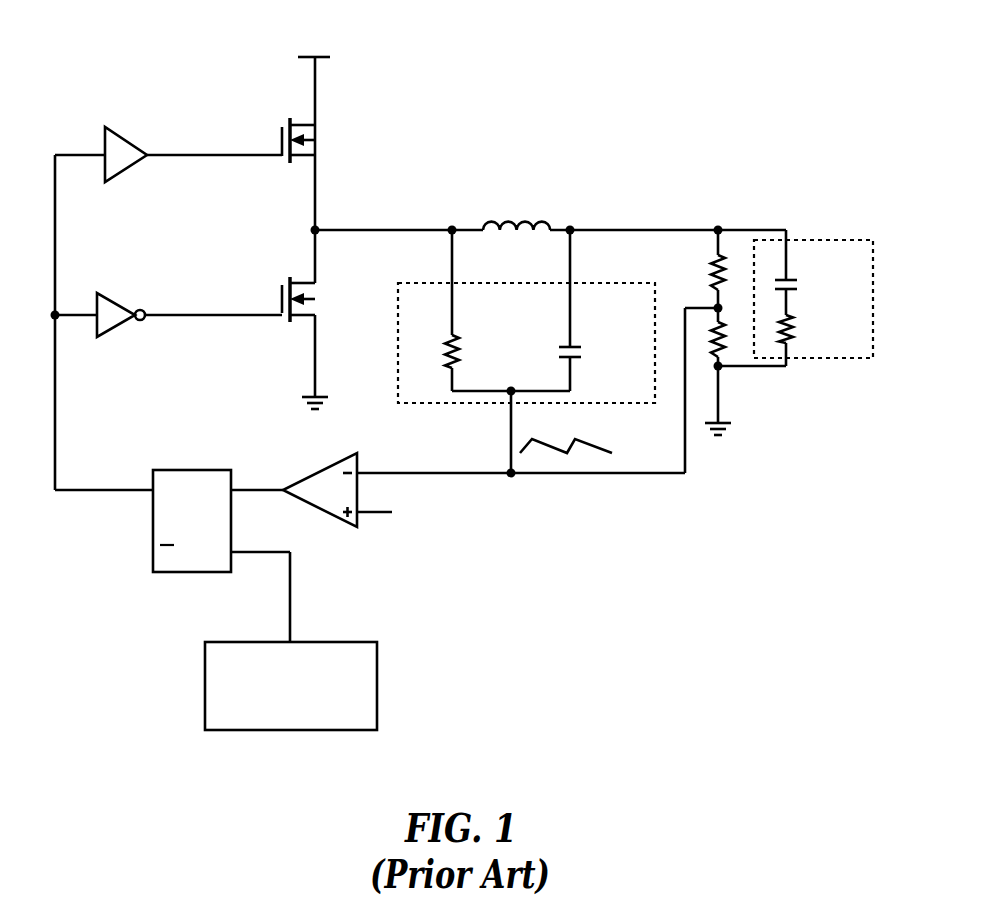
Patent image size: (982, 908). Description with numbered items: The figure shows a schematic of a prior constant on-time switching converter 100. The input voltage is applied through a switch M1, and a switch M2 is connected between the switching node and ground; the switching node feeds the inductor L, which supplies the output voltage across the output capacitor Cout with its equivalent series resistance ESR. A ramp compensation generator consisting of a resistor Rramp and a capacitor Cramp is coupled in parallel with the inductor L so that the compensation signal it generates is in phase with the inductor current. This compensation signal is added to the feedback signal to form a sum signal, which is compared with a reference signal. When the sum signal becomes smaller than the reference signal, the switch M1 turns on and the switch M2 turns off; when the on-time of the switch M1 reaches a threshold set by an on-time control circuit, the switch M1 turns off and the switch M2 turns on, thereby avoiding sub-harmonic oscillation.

The COT switching converter 100 is at (610, 107).
The switch M1 is at (318, 140).
The switch M2 is at (318, 299).
The inductor L is at (516, 211).
The resistor Rramp is at (486, 355).
The capacitor Cramp is at (602, 365).
The output capacitor Cout is at (813, 284).
The equivalent series resistance of output capacitor ESR is at (815, 329).